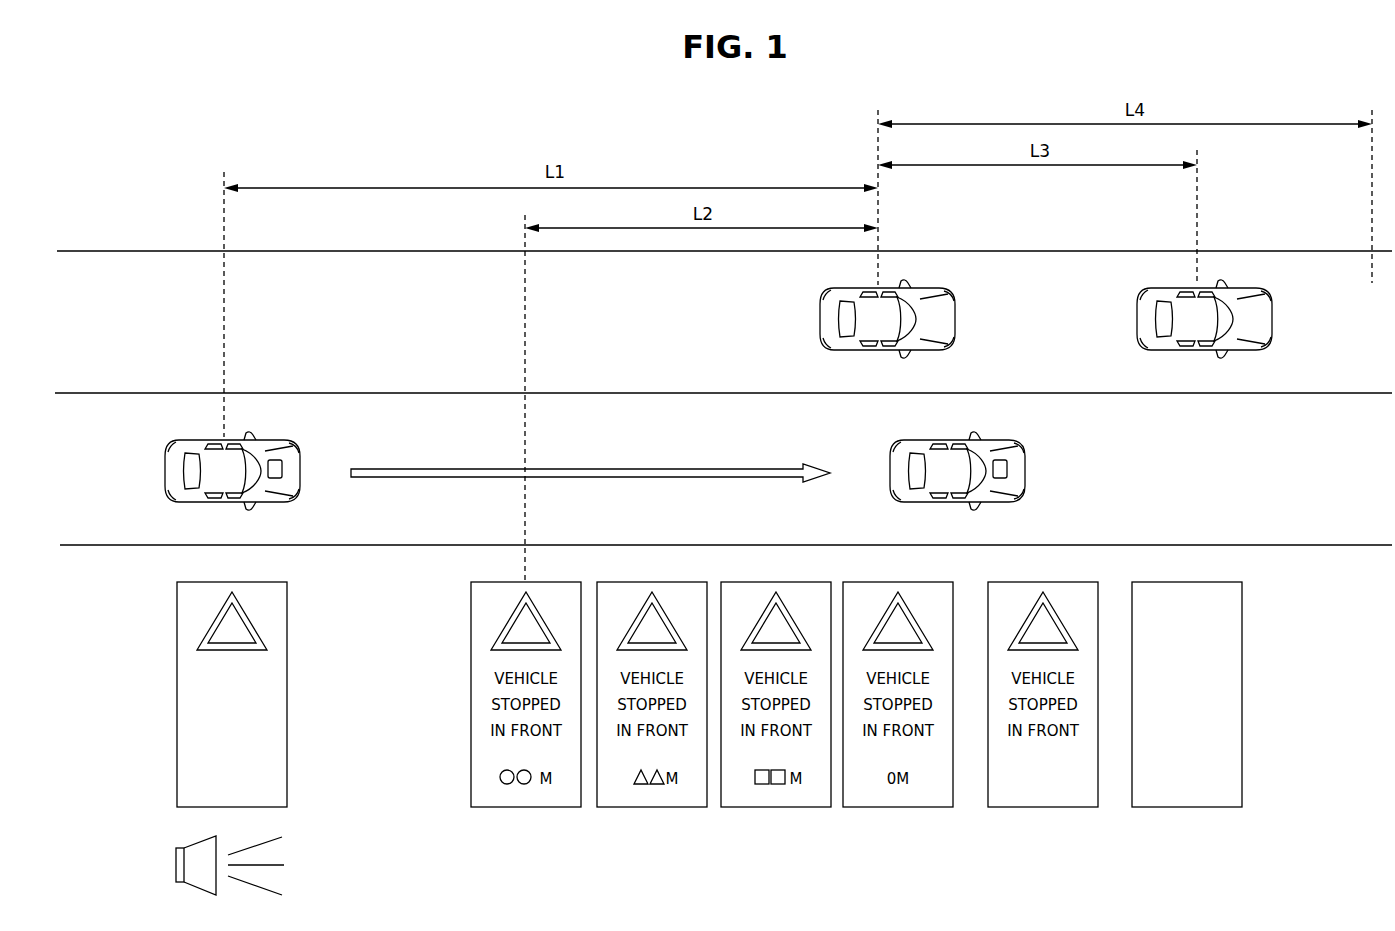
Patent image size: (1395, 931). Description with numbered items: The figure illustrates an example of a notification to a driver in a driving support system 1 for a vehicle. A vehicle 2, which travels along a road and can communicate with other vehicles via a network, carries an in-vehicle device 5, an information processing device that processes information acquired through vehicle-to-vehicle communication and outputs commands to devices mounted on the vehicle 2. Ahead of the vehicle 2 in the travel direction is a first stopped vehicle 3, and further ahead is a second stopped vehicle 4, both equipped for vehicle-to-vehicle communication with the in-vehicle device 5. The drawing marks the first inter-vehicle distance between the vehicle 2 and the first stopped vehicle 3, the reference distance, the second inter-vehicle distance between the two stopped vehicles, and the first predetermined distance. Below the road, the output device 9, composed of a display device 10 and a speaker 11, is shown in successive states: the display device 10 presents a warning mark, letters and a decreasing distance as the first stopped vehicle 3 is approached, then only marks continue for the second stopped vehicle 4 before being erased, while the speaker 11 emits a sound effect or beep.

The driving support system 1 is at (1343, 95).
The vehicle 2 is at (166, 465).
The first stopped vehicle 3 is at (821, 315).
The second stopped vehicle 4 is at (1138, 315).
The in-vehicle device 5 is at (278, 446).
The output device 9 is at (80, 768).
The display device 10 is at (177, 765).
The speaker 11 is at (176, 860).